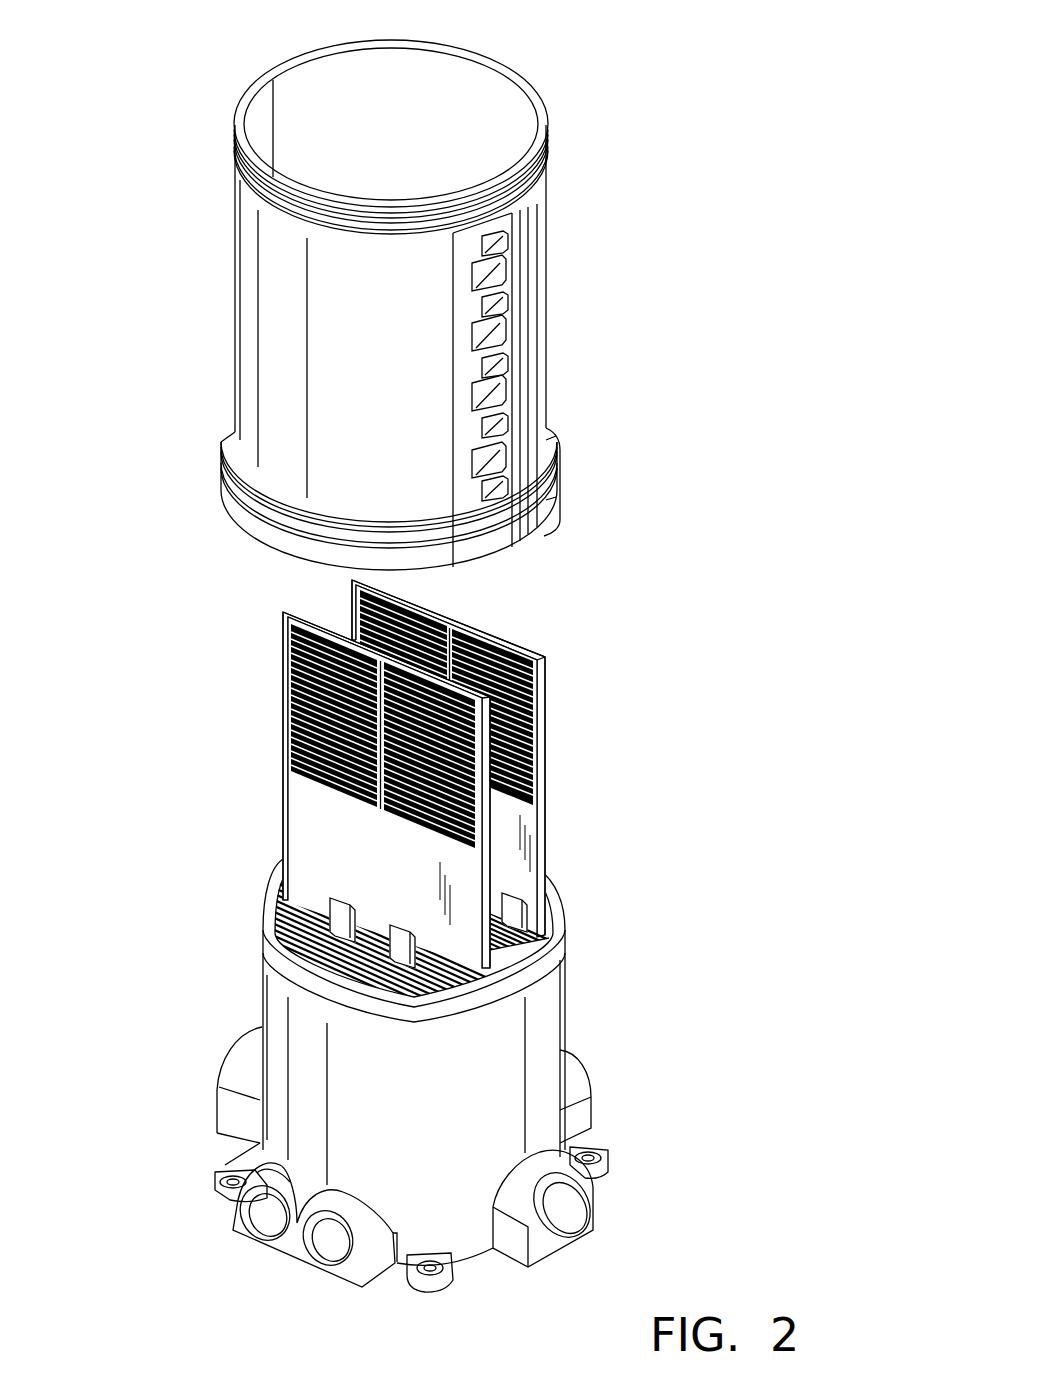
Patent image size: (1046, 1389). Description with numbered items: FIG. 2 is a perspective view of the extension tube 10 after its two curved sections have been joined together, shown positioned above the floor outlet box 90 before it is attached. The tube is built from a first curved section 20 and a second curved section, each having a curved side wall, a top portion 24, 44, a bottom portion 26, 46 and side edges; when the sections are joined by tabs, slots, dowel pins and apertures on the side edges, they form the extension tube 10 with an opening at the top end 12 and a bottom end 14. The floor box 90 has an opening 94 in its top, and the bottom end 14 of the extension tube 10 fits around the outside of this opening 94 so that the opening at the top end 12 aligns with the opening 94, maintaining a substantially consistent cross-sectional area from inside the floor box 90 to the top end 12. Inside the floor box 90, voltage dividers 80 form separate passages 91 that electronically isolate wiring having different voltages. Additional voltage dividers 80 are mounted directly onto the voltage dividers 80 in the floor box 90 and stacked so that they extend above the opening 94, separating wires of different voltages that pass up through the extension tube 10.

The extension tube 10 is at (435, 303).
The top end 12 is at (426, 78).
The bottom end 14 is at (465, 563).
The curved section 20 is at (240, 334).
The top portion 24 is at (240, 128).
The bottom portion 26 is at (270, 545).
The top portion 44 is at (535, 70).
The bottom portion 46 is at (548, 492).
The voltage dividers 80 is at (552, 780).
The floor outlet box 90 is at (350, 1071).
The passages 91 is at (520, 925).
The opening 94 is at (283, 898).